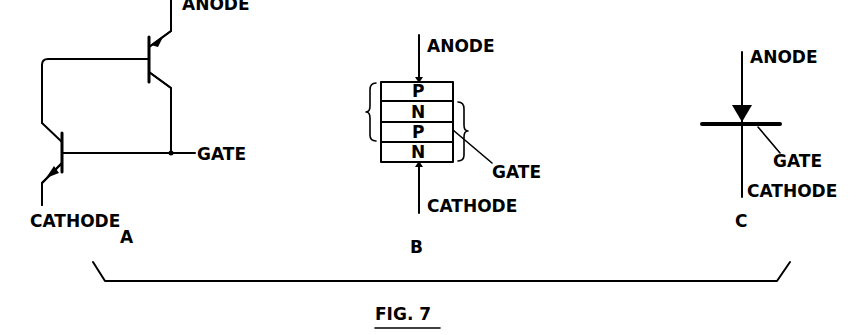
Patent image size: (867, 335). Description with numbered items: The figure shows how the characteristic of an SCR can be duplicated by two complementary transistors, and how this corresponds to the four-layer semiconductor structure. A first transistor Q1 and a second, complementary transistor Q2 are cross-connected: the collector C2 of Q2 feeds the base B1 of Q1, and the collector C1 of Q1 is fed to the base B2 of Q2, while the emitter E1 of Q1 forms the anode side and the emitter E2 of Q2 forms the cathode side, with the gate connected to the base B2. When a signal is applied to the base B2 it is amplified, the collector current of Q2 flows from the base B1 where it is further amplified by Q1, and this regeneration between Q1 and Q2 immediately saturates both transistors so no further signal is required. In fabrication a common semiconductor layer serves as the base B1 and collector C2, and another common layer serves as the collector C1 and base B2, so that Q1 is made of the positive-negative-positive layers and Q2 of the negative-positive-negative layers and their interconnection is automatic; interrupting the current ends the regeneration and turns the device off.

The PNP transistor Q1 is at (251, 95).
The NPN transistor Q2 is at (274, 157).
The emitter of Q1 E1 is at (156, 23).
The base of Q1 B1 is at (95, 78).
The collector of Q1 C1 is at (154, 112).
The collector of Q2 C2 is at (56, 103).
The base of Q2 B2 is at (128, 143).
The emitter of Q2 E2 is at (56, 184).